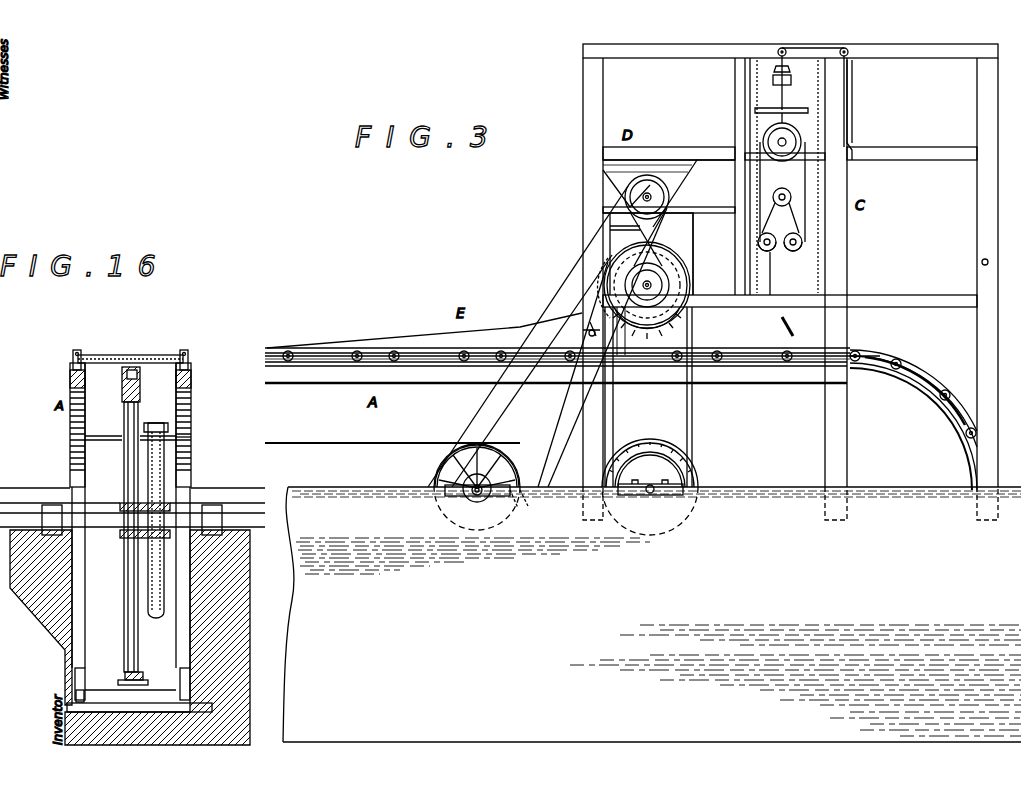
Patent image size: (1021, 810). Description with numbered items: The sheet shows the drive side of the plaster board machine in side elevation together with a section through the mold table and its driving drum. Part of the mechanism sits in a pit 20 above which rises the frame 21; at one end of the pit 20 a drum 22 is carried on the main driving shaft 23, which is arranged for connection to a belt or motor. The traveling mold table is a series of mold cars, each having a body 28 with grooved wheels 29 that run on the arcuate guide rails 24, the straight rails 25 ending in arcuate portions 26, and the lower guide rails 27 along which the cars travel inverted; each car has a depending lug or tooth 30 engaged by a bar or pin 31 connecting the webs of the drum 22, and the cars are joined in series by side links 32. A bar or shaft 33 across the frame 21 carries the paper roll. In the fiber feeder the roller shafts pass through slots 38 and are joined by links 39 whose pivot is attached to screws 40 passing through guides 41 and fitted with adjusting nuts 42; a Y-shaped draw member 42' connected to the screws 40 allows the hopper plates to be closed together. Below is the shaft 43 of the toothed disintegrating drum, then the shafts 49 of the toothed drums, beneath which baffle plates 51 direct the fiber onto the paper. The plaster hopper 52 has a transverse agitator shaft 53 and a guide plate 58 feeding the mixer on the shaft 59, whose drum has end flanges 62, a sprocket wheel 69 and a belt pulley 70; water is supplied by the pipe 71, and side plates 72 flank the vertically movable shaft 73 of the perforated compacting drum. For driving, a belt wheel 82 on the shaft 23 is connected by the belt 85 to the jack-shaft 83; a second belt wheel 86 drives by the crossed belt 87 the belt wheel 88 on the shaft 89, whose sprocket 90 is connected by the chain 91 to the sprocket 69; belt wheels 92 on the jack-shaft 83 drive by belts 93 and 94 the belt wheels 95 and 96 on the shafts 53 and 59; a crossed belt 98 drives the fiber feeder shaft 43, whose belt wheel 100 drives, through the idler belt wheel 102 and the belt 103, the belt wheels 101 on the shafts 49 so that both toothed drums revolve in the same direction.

In FIG. 16, the pit 20 is at (192, 612).
In FIG. 3, the pit 20 is at (293, 698).
In FIG. 3, the frame 21 is at (787, 47).
In FIG. 16, the drum 22 is at (122, 425).
In FIG. 16, the shaft 23 is at (205, 500).
In FIG. 3, the arcuate guide rails 24 is at (958, 432).
In FIG. 16, the straight rails 25 is at (68, 380).
In FIG. 3, the straight rails 25 is at (311, 386).
In FIG. 16, the arcuate portions 26 is at (70, 466).
In FIG. 16, the guide rails 27 is at (72, 370).
In FIG. 3, the guide rails 27 is at (764, 386).
In FIG. 16, the body 28 is at (155, 356).
In FIG. 3, the body 28 is at (940, 376).
In FIG. 16, the grooved wheels 29 is at (79, 350).
In FIG. 3, the grooved wheels 29 is at (898, 359).
In FIG. 16, the lug or tooth 30 is at (132, 367).
In FIG. 3, the lug or tooth 30 is at (428, 368).
In FIG. 16, the bar or pin 31 is at (122, 372).
In FIG. 16, the links 32 is at (184, 350).
In FIG. 3, the links 32 is at (370, 351).
In FIG. 3, the bar or shaft 33 is at (990, 262).
In FIG. 3, the slots 38 is at (800, 108).
In FIG. 3, the links 39 is at (755, 112).
In FIG. 3, the screws 40 is at (774, 70).
In FIG. 3, the guides 41 is at (773, 80).
In FIG. 3, the thumb or adjusting nuts 42 is at (816, 38).
In FIG. 3, the Y-shaped draw member 42' is at (873, 101).
In FIG. 3, the shaft 43 is at (805, 140).
In FIG. 3, the shafts 49 is at (790, 256).
In FIG. 3, the baffle plates 51 is at (780, 324).
In FIG. 3, the hopper 52 is at (603, 165).
In FIG. 3, the transverse shaft 53 is at (632, 206).
In FIG. 3, the guide plate 58 is at (603, 213).
In FIG. 3, the transverse shaft 59 is at (670, 284).
In FIG. 3, the flanges 62 is at (690, 262).
In FIG. 3, the sprocket wheel 69 is at (632, 278).
In FIG. 3, the belt pulley 70 is at (687, 324).
In FIG. 3, the water supply pipe 71 is at (586, 247).
In FIG. 3, the plate 72 is at (432, 345).
In FIG. 3, the vertically movable shaft 73 is at (583, 331).
In FIG. 16, the belt wheel 82 is at (162, 462).
In FIG. 3, the jack-shaft 83 is at (477, 497).
In FIG. 16, the belt 85 is at (193, 410).
In FIG. 3, the belt 85 is at (385, 447).
In FIG. 3, the second belt wheel 86 is at (500, 462).
In FIG. 3, the crossed belt 87 is at (588, 445).
In FIG. 3, the belt wheel 88 is at (656, 448).
In FIG. 3, the shaft 89 is at (652, 495).
In FIG. 3, the sprocket 90 is at (686, 462).
In FIG. 3, the chain 91 is at (693, 414).
In FIG. 3, the belt wheels 92 is at (432, 470).
In FIG. 3, the belt 93 is at (588, 332).
In FIG. 3, the belt 94 is at (614, 410).
In FIG. 3, the belt wheel 95 is at (652, 175).
In FIG. 3, the belt wheel 96 is at (663, 248).
In FIG. 3, the crossed belt 98 is at (724, 207).
In FIG. 3, the belt wheel 100 is at (798, 132).
In FIG. 3, the belt wheel 101 is at (798, 242).
In FIG. 3, the idler belt wheel 102 is at (791, 196).
In FIG. 3, the belt 103 is at (805, 166).